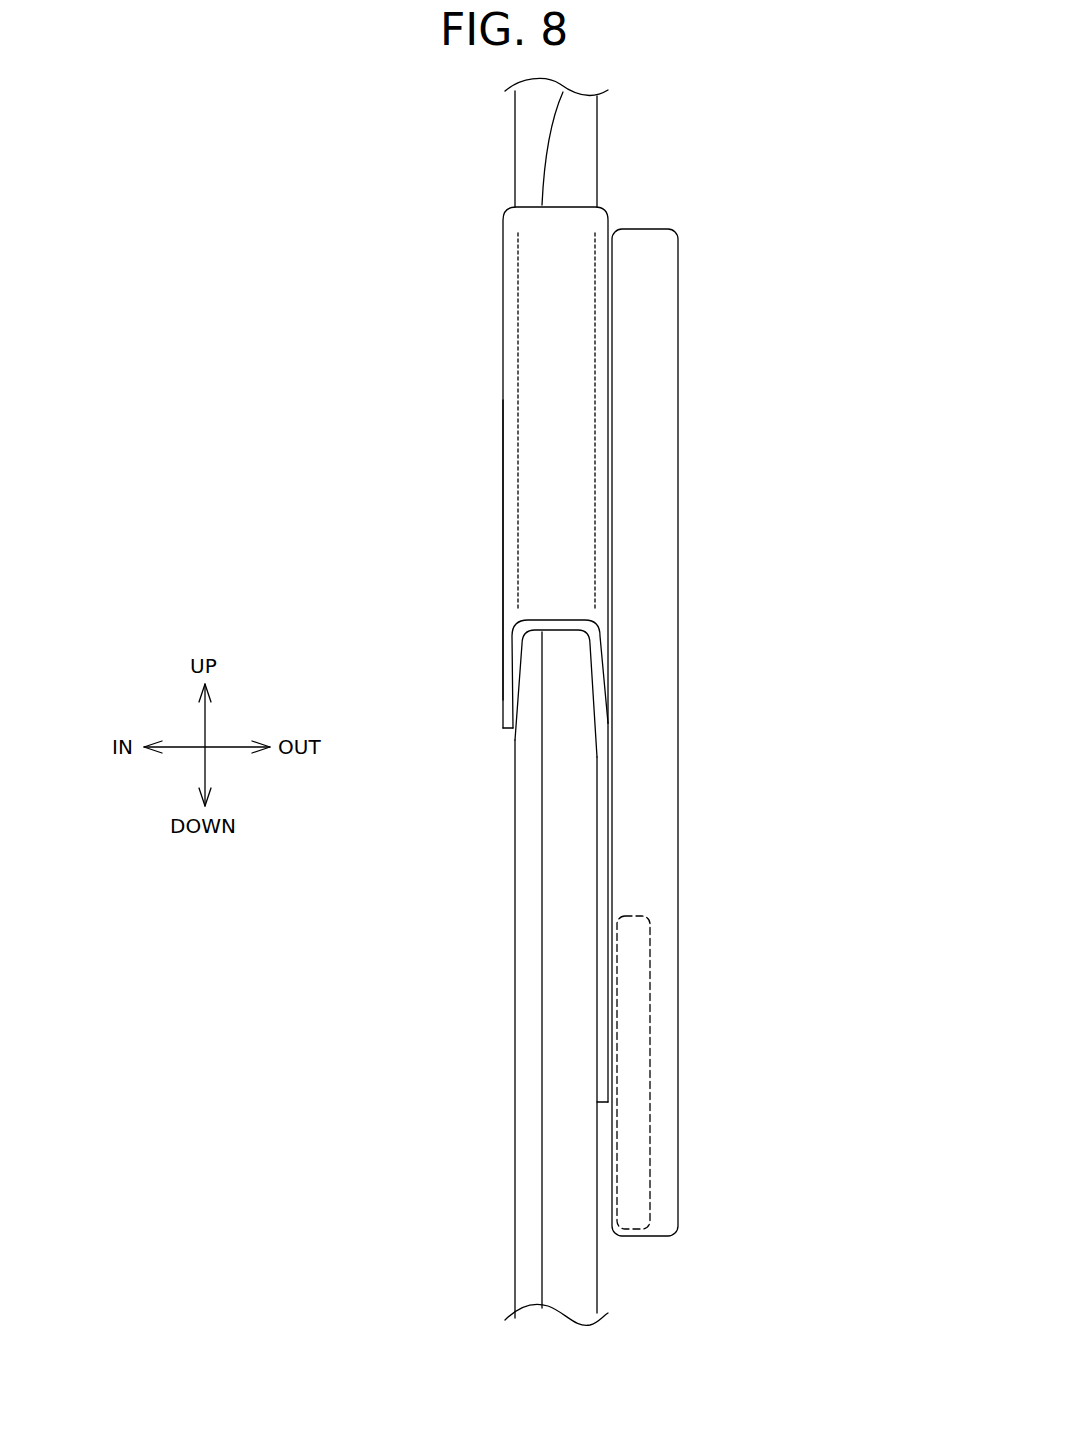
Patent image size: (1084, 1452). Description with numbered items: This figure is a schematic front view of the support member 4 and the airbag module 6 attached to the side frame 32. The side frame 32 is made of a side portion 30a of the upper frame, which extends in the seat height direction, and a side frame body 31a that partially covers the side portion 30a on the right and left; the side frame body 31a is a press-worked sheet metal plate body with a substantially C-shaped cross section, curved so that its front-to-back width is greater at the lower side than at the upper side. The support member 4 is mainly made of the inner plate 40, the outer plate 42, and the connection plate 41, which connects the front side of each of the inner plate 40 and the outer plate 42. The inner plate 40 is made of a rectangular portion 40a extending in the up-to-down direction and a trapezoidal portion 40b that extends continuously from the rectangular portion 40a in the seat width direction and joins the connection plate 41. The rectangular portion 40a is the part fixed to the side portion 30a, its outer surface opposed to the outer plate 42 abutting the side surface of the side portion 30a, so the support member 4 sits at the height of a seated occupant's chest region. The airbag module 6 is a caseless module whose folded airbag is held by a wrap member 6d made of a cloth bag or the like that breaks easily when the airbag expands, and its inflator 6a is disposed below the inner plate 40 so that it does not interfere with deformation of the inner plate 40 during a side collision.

The support member 4 is at (437, 458).
The connection plate 41 is at (545, 402).
The inner plate 40 is at (422, 537).
The trapezoidal portion 40b is at (512, 552).
The rectangular portion 40a is at (505, 662).
The outer plate 42 is at (602, 872).
The side frame 32 is at (422, 1047).
The side portion 30a is at (528, 1072).
The side frame body 31a is at (562, 1165).
The airbag module 6 is at (715, 732).
The wrap member 6d is at (665, 697).
The inflator 6a is at (651, 1138).